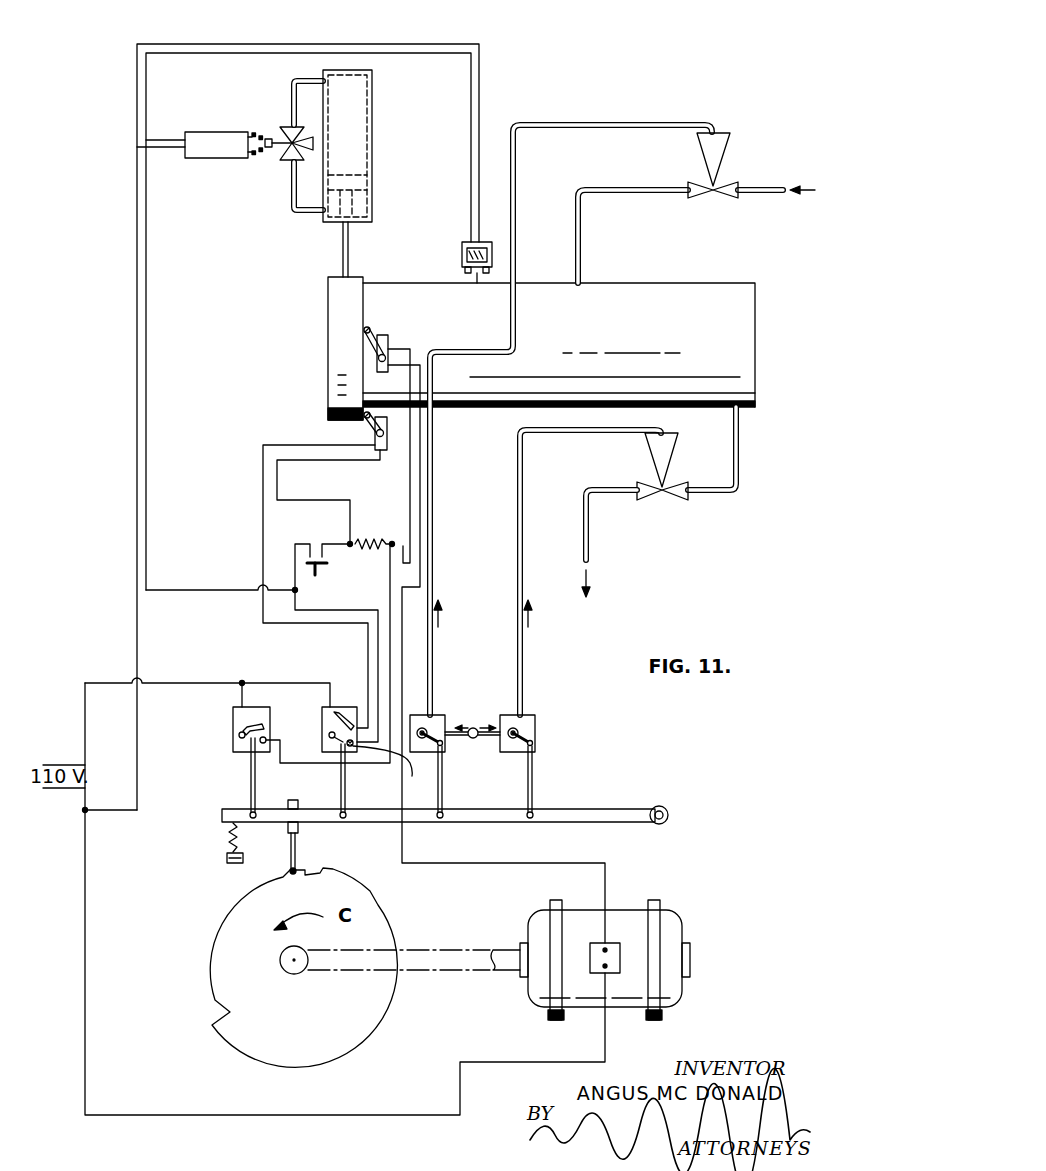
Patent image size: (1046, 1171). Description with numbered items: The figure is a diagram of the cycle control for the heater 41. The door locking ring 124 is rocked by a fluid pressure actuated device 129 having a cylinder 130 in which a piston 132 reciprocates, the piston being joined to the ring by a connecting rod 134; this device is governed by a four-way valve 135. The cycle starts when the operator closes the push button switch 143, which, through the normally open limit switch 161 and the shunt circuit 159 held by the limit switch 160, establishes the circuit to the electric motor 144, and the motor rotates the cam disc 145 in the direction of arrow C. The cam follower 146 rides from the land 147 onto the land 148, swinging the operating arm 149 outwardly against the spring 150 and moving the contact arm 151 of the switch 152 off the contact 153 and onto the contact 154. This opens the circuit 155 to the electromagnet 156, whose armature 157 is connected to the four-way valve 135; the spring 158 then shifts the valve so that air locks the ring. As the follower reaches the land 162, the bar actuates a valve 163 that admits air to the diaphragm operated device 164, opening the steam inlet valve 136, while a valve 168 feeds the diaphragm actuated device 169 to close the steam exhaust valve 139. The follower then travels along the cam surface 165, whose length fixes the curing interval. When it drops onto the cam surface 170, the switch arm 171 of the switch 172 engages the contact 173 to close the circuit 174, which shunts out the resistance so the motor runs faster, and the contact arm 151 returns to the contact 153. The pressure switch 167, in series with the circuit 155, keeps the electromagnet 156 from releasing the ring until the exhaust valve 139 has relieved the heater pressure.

The heater 41 is at (656, 297).
The door locking ring 124 is at (365, 283).
The fluid pressure actuated device 129 is at (376, 165).
The cylinder 130 is at (374, 110).
The piston 132 is at (365, 183).
The connecting rod 134 is at (350, 250).
The four-way valve 135 is at (286, 162).
The steam inlet valve 136 is at (698, 197).
The steam exhaust valve 139 is at (664, 494).
The push button switch 143 is at (323, 567).
The electric motor 144 is at (674, 935).
The cam disc 145 is at (388, 1008).
The cam follower 146 is at (300, 870).
The land 147 is at (290, 869).
The land 148 is at (326, 870).
The operating arm 149 is at (353, 812).
The spring 150 is at (226, 840).
The contact arm 151 is at (343, 739).
The switch 152 is at (370, 691).
The contact 153 is at (392, 772).
The contact 154 is at (343, 710).
The circuit 155 is at (143, 360).
The electromagnet 156 is at (211, 160).
The armature 157 is at (258, 131).
The spring 158 is at (256, 154).
The shunt circuit 159 is at (262, 515).
The limit switch 160 is at (386, 450).
The limit switch 161 is at (387, 340).
The land 162 is at (370, 896).
The valve 163 is at (447, 717).
The diaphragm operated device 164 is at (718, 182).
The cam surface 165 is at (405, 940).
The pressure switch 167 is at (493, 257).
The valve 168 is at (535, 728).
The diaphragm actuated device 169 is at (668, 461).
The cam surface 170 is at (218, 1000).
The switch arm 171 is at (249, 753).
The switch 172 is at (230, 728).
The contact 173 is at (268, 738).
The circuit 174 is at (312, 767).